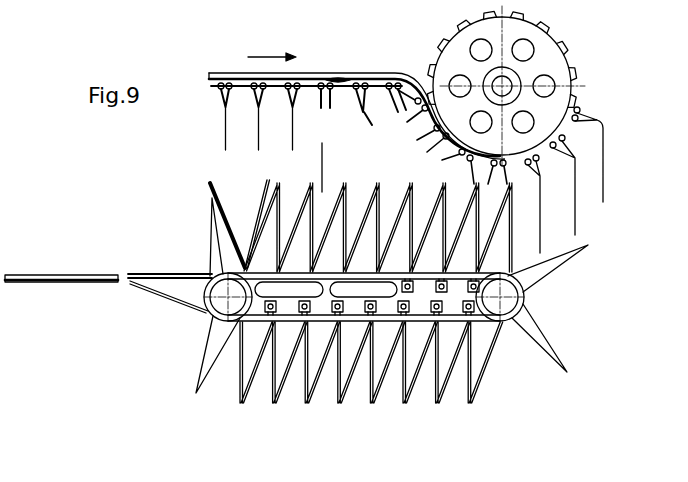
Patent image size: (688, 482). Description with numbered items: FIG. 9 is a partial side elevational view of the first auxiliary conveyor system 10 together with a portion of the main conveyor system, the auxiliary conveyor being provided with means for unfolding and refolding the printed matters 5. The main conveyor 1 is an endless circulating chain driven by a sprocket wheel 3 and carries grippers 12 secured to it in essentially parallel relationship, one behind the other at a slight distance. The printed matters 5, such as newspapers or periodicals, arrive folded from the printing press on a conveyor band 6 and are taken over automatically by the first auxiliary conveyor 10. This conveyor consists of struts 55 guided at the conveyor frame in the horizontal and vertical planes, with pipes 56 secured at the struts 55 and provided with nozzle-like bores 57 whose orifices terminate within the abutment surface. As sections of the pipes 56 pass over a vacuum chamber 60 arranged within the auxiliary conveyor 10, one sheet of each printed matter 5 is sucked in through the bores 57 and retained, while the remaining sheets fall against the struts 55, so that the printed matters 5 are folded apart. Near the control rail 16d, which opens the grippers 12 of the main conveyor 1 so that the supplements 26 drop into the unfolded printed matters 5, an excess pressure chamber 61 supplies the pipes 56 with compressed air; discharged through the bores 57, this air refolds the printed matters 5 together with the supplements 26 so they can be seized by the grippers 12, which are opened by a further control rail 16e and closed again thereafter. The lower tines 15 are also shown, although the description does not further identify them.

The main conveyor 1 is at (383, 72).
The sprocket wheel 3 is at (553, 50).
The printed matters 5 is at (262, 186).
The conveyor band 6 is at (75, 283).
The first auxiliary conveyor system 10 is at (450, 310).
The grippers 12 is at (368, 112).
The lower tines 15 is at (306, 405).
The control rail 16d is at (336, 77).
The control rail 16e is at (478, 150).
The supplements 26 is at (226, 130).
The struts 55 is at (210, 240).
The pipes 56 is at (530, 350).
The nozzle-like bores 57 is at (233, 228).
The vacuum chamber 60 is at (262, 299).
The excess pressure chamber 61 is at (355, 292).